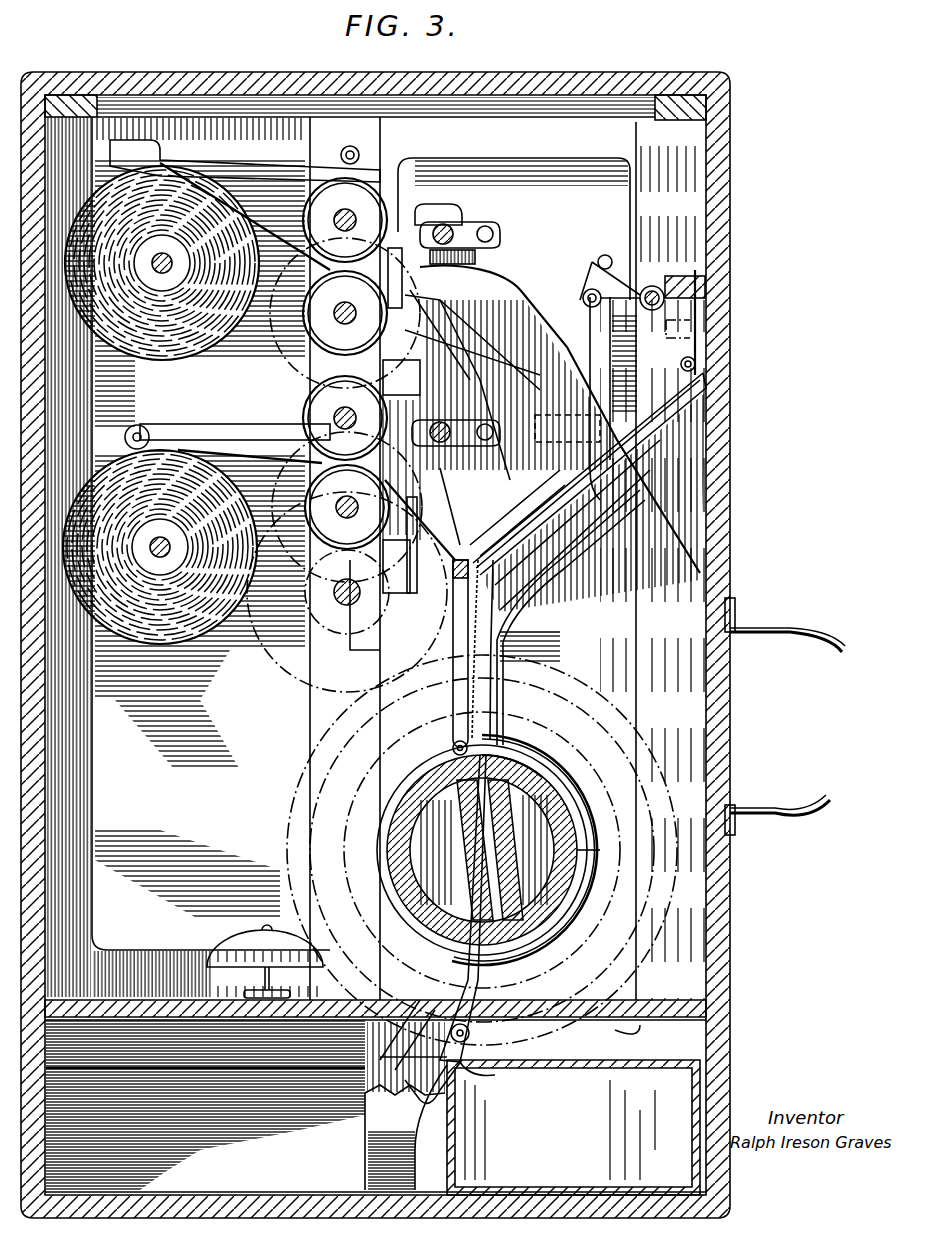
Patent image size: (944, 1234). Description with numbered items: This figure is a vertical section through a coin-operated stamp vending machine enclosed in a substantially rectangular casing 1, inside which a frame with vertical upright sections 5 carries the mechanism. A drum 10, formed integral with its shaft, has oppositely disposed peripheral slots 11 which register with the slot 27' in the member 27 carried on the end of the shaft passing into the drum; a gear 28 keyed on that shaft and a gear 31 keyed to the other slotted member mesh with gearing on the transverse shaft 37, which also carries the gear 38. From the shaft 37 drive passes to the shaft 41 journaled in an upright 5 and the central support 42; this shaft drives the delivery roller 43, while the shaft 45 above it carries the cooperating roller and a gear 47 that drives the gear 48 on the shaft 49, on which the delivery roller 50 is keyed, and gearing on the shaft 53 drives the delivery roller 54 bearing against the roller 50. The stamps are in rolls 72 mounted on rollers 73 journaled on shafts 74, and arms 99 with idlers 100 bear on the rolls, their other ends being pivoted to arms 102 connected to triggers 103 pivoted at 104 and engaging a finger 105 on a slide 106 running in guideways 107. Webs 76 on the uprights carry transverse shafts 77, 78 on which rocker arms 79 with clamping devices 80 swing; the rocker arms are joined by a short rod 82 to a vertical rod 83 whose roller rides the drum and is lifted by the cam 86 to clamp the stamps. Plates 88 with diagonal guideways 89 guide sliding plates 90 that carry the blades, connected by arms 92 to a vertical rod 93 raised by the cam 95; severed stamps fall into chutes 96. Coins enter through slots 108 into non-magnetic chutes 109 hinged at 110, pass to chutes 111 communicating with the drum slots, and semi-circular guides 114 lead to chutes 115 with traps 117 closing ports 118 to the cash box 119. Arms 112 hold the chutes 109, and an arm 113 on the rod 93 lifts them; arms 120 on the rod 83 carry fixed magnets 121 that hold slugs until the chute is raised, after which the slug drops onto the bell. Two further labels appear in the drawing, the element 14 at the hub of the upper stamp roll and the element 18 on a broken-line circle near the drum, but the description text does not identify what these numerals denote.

The casing 1 is at (575, 72).
The vertical upright sections 5 is at (640, 200).
The drum 10 is at (425, 928).
The slots 11 is at (445, 765).
The spool shaft 14 is at (160, 253).
The guide circle 18 is at (592, 745).
The member 27 is at (459, 850).
The slot 27' is at (517, 850).
The gear 28 is at (287, 802).
The gear 31 is at (273, 955).
The transverse shaft 37 is at (332, 598).
The gear 38 is at (760, 805).
The shaft 41 is at (347, 507).
The central support 42 is at (310, 690).
The delivery roller 43 is at (312, 480).
The shaft 45 is at (345, 418).
The gear 47 is at (636, 1037).
The gear 48 is at (300, 400).
The shaft 49 is at (345, 313).
The delivery roller 50 is at (300, 335).
The shaft 53 is at (345, 220).
The delivery roller 54 is at (310, 203).
The rolls of stamps 72 is at (255, 258).
The rollers 73 is at (182, 255).
The shafts 74 is at (172, 547).
The webs 76 is at (445, 214).
The transverse shaft 77 is at (470, 222).
The transverse shaft 78 is at (475, 390).
The rocker arms 79 is at (455, 233).
The clamping devices 80 is at (416, 278).
The short rod 82 is at (495, 234).
The vertical rod 83 is at (476, 257).
The cam 86 is at (512, 749).
The plates 88 is at (425, 310).
The diagonal guideways 89 is at (382, 605).
The plates 90 is at (457, 408).
The arms 92 is at (470, 345).
The vertical rod 93 is at (446, 700).
The cam 95 is at (450, 750).
The chutes 96 is at (575, 290).
The arms 99 is at (250, 432).
The idlers 100 is at (147, 428).
The arms 102 is at (595, 330).
The triggers 103 is at (600, 275).
The pivot 104 is at (653, 286).
The finger 105 is at (685, 286).
The slides 106 is at (700, 314).
The guideways 107 is at (700, 328).
The slots 108 is at (706, 357).
The chutes 109 is at (690, 415).
The hinge 110 is at (708, 380).
The chutes 111 is at (503, 686).
The arms 112 is at (517, 513).
The arm 113 is at (420, 595).
The semi-circular guides 114 is at (603, 860).
The chutes 115 is at (460, 960).
The traps 117 is at (472, 1030).
The ports 118 is at (497, 1076).
The cash box 119 is at (573, 1127).
The arms 120 is at (560, 588).
The fixed magnets 121 is at (585, 550).